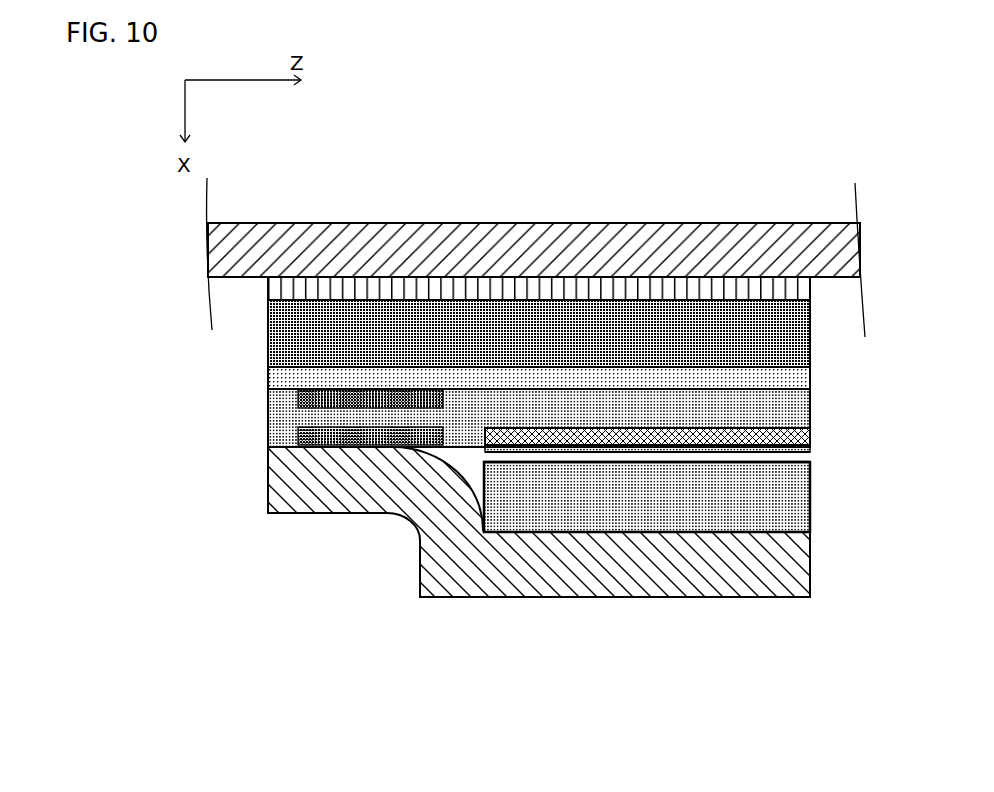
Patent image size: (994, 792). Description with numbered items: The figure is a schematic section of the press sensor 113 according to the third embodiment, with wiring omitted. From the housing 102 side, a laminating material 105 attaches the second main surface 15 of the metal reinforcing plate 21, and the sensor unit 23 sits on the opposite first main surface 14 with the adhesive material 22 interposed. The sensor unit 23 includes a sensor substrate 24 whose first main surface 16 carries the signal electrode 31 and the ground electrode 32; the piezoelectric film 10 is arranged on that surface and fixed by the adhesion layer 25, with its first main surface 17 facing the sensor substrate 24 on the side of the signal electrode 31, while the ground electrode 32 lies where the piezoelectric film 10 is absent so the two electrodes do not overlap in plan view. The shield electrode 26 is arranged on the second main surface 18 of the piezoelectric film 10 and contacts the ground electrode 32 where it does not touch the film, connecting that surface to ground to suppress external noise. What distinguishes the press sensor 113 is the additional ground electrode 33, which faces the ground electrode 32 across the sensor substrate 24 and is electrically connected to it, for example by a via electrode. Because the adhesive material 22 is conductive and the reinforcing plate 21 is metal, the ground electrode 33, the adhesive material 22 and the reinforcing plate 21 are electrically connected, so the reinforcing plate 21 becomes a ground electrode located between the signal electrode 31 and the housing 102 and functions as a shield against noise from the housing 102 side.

The housing 102 is at (460, 224).
The laminating material 105 is at (565, 277).
The second main surface 15 is at (678, 300).
The first main surface 14 is at (810, 373).
The reinforcing plate 21 is at (267, 336).
The adhesive material 22 is at (267, 378).
The sensor substrate 24 is at (810, 403).
The ground electrode 33 is at (292, 401).
The ground electrode 32 is at (293, 437).
The signal electrode 31 is at (810, 438).
The adhesion layer 25 is at (810, 453).
The first main surface 17 is at (628, 462).
The piezoelectric film 10 is at (810, 493).
The shield electrode 26 is at (810, 558).
The first main surface 16 is at (467, 448).
The second main surface 18 is at (542, 533).
The sensor unit 23 is at (592, 626).
The press sensor 113 is at (736, 714).